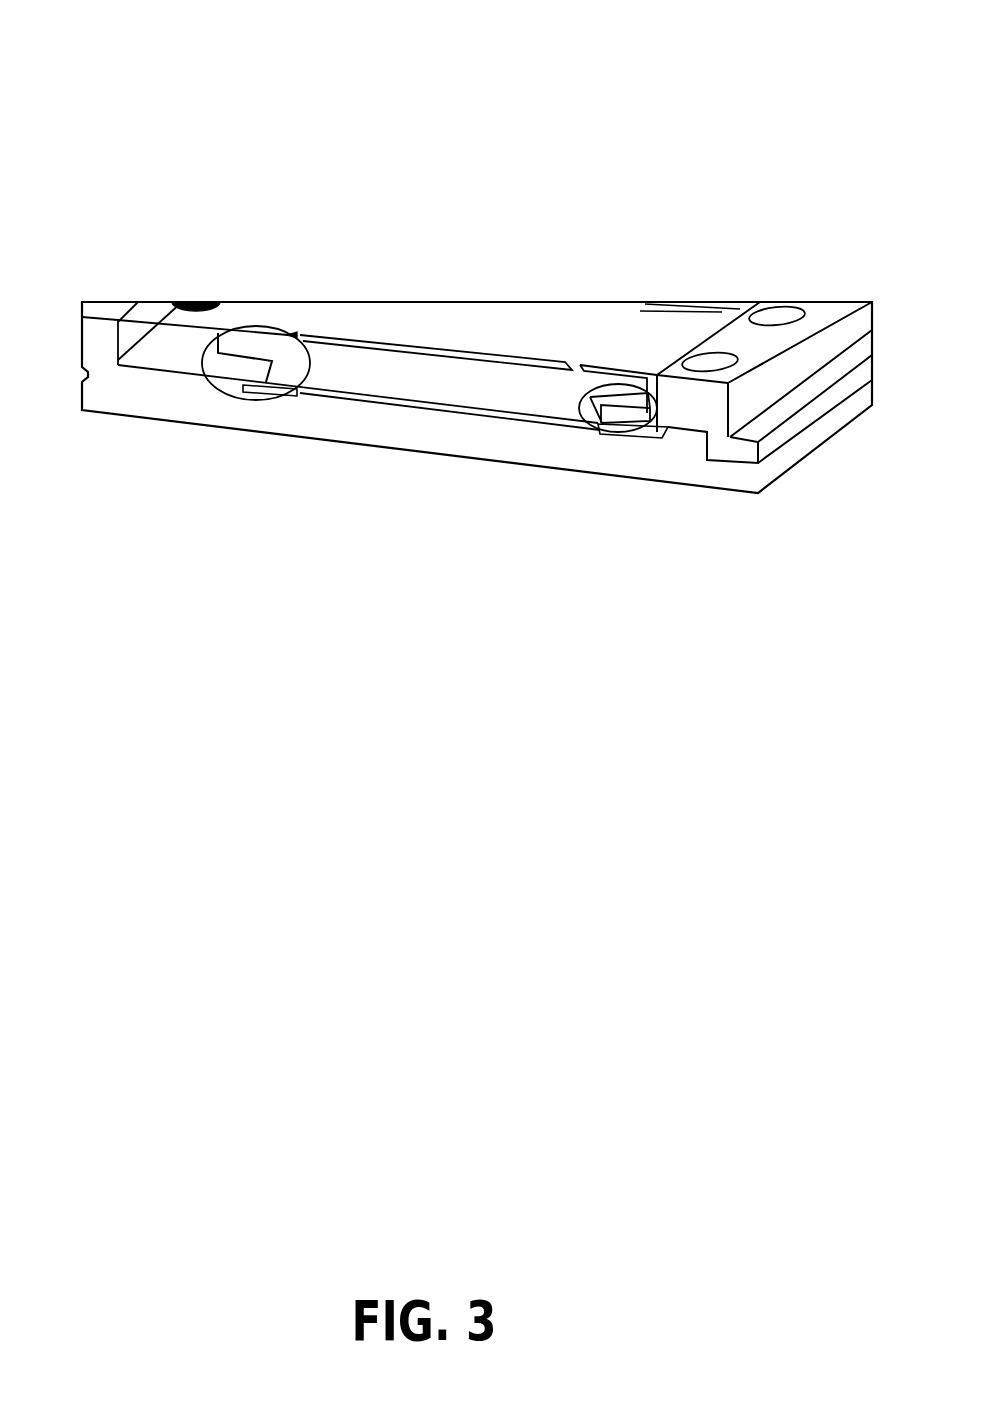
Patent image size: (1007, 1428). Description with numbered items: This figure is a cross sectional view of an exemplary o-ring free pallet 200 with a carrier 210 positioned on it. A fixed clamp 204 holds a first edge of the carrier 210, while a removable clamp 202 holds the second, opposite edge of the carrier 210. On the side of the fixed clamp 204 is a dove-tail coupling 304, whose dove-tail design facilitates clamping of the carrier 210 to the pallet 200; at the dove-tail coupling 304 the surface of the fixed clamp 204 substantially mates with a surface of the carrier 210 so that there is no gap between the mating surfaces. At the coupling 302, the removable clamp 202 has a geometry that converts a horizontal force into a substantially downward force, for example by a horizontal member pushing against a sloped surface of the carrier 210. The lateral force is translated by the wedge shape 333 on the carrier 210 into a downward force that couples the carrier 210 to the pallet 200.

The o-ring free pallet 200 is at (444, 32).
The carrier 210 is at (528, 333).
The removable clamp 202 is at (685, 421).
The fixed clamp 204 is at (240, 386).
The dove-tail coupling 304 is at (227, 391).
The wedge shape 333 is at (602, 393).
The coupling 302 is at (595, 426).